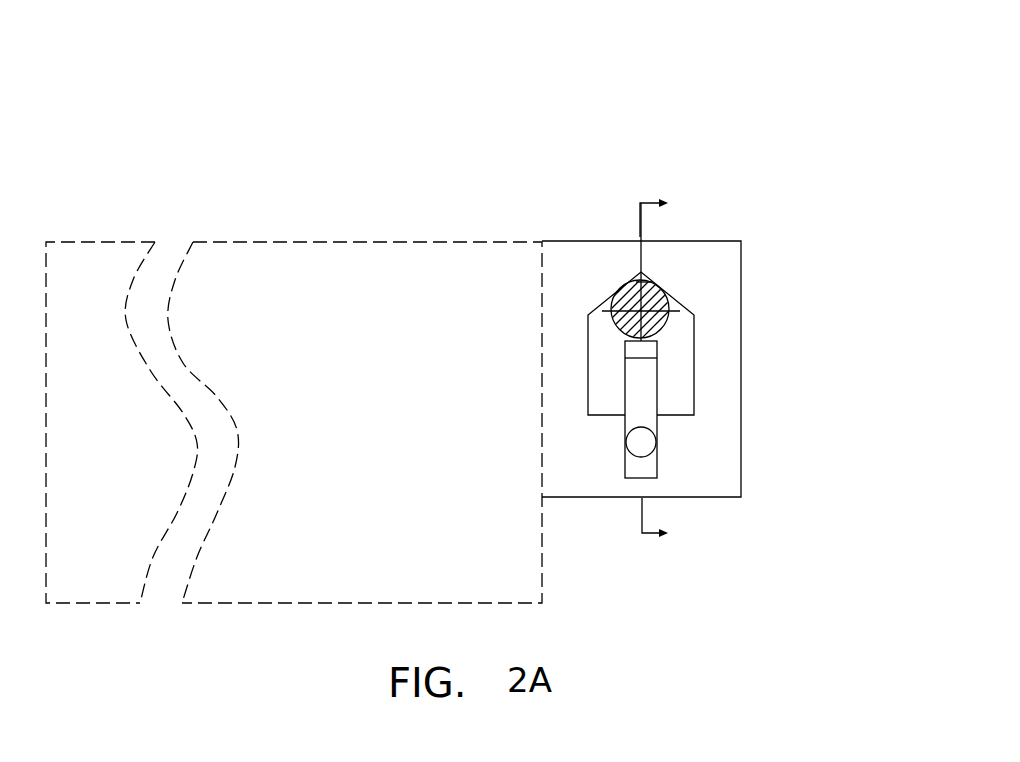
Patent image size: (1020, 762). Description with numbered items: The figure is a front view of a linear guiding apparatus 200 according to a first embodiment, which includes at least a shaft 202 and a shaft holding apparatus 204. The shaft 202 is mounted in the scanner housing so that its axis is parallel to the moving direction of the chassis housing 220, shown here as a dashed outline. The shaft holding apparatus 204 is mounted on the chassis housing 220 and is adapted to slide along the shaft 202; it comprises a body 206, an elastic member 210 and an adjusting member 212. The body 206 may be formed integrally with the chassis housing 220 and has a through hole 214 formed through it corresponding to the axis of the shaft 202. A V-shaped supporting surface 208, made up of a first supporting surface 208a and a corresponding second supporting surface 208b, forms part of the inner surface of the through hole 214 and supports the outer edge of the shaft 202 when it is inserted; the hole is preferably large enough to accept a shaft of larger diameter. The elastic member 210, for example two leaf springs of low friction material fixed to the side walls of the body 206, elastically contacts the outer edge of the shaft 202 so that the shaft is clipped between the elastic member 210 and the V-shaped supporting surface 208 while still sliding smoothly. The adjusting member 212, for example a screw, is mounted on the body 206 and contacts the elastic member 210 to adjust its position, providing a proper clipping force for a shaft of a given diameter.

The linear guiding apparatus 200 is at (796, 33).
The shaft 202 is at (605, 325).
The shaft holding apparatus 204 is at (721, 369).
The body 206 is at (741, 403).
The V-shaped supporting surface 208 is at (609, 212).
The first supporting surface 208a is at (620, 288).
The second supporting surface 208b is at (660, 290).
The elastic member 210 is at (658, 392).
The adjusting member 212 is at (657, 443).
The through hole 214 is at (675, 347).
The chassis housing 220 is at (265, 242).